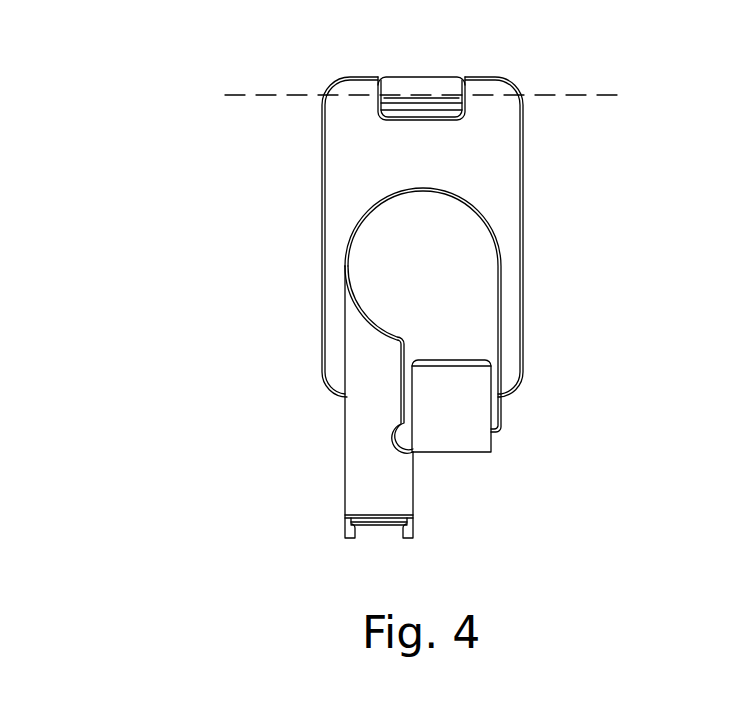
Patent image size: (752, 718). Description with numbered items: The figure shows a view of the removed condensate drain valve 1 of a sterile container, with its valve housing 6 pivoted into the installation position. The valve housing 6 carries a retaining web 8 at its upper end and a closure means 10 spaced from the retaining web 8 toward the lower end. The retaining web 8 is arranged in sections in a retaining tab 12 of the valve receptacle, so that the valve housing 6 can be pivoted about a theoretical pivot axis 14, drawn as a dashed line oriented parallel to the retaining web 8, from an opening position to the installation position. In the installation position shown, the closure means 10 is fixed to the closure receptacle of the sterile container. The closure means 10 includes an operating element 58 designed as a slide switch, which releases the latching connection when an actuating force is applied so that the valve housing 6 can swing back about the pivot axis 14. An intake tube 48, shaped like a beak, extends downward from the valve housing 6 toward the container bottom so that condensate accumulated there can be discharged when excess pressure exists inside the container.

The condensate drain valve 1 is at (170, 88).
The valve housing 6 is at (522, 260).
The retaining web 8 is at (466, 93).
The closure means 10 is at (489, 467).
The retaining tab 12 is at (378, 79).
The pivot axis 14 is at (575, 96).
The intake tube 48 is at (355, 465).
The operating element 58 is at (498, 399).